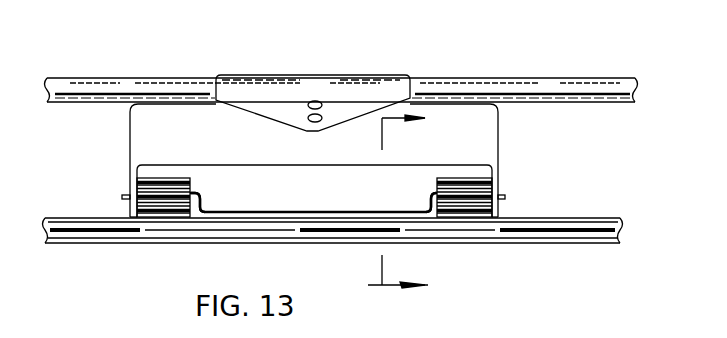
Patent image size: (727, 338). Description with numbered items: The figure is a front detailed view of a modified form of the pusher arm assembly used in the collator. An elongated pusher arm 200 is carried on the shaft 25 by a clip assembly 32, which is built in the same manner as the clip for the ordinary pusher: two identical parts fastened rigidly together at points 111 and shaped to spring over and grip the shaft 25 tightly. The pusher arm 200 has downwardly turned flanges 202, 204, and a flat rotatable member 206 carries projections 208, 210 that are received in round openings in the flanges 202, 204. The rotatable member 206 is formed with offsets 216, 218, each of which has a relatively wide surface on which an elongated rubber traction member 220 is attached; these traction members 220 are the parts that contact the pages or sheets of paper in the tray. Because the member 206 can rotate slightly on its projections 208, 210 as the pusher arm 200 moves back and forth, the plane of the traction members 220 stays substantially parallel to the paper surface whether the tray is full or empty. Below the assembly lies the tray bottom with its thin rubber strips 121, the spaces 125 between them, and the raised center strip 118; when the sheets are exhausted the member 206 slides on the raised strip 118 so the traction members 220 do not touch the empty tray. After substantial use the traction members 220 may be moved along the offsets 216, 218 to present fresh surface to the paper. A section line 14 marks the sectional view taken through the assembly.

The shaft 25 is at (112, 88).
The clip assembly 32 is at (366, 94).
The points 111 is at (308, 118).
The section line 14- 14 is at (412, 204).
The pusher arm 200 is at (146, 125).
The flange 202 is at (134, 181).
The flange 204 is at (496, 183).
The projection 208 is at (122, 197).
The projection 210 is at (506, 197).
The rubber traction members 220 is at (170, 190).
The rotatable member 206 is at (230, 212).
The offset 216 is at (203, 206).
The offset 218 is at (430, 202).
The center rubber strip 118 is at (231, 232).
The rubber strips 121 is at (114, 236).
The spaces 125 is at (176, 232).